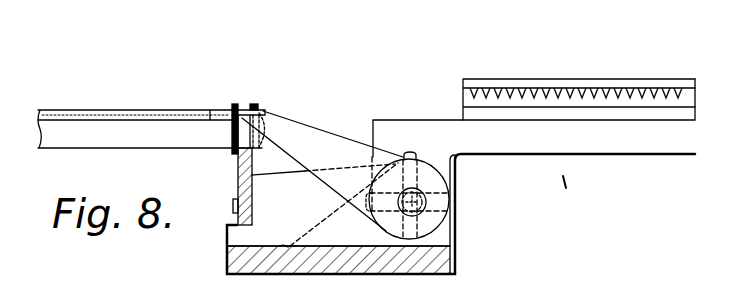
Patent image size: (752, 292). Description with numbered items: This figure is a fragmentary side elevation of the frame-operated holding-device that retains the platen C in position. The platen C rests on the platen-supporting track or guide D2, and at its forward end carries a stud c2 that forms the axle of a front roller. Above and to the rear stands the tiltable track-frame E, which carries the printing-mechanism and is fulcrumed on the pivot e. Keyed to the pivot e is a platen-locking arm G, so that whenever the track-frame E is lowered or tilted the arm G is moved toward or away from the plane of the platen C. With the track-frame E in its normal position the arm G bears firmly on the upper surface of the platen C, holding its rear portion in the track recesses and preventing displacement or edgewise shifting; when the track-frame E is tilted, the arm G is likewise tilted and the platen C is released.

The platen C is at (175, 113).
The stud c2 is at (252, 104).
The platen-locking arm G is at (325, 138).
The platen-supporting track or guide D2 is at (238, 174).
The track-frame E is at (530, 86).
The pivot e is at (427, 194).